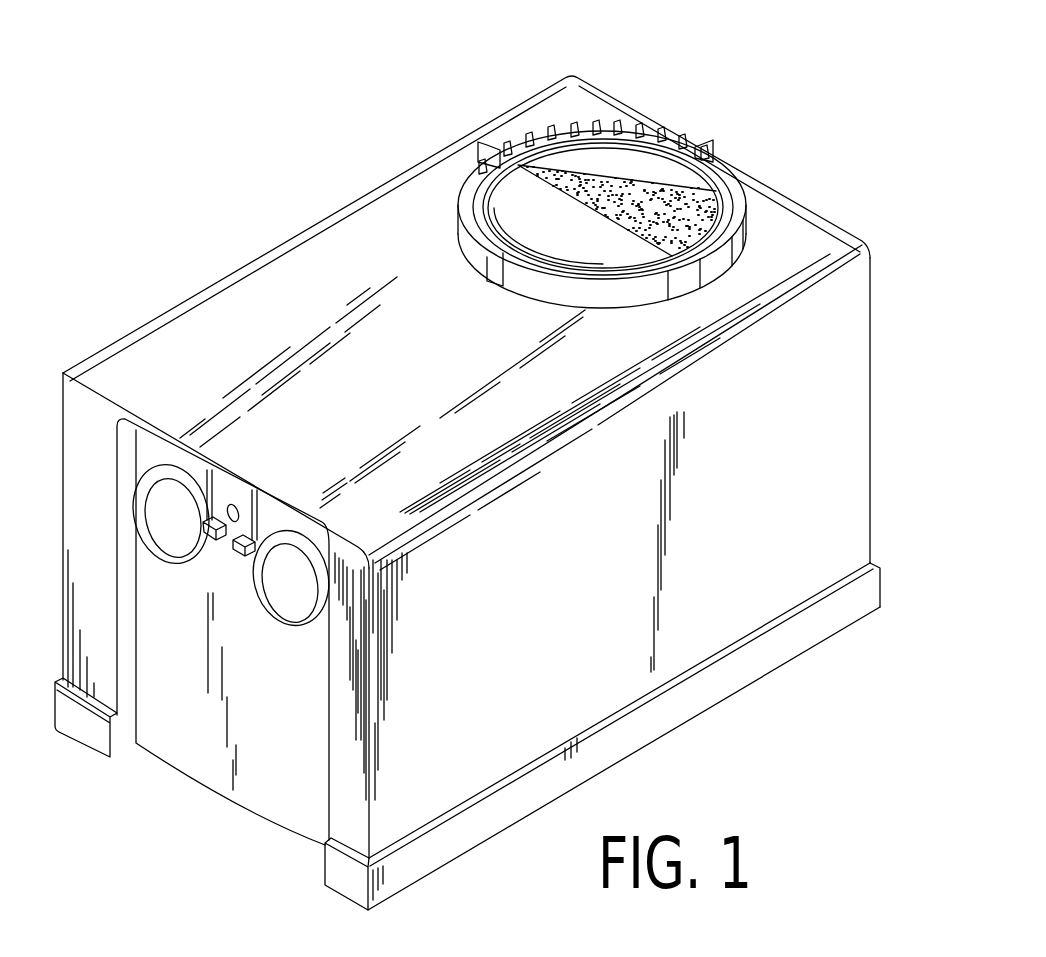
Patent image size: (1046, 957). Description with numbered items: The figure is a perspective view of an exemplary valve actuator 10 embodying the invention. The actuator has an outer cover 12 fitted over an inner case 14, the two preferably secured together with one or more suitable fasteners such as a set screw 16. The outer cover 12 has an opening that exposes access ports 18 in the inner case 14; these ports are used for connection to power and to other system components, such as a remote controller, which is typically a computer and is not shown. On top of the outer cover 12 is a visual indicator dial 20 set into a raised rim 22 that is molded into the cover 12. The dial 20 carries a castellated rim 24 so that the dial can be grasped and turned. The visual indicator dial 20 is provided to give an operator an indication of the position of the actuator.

The valve actuator 10 is at (413, 107).
The outer cover 12 is at (757, 572).
The inner case 14 is at (193, 723).
The set screw 16 is at (229, 506).
The access ports 18 is at (175, 530).
The visual indicator dial 20 is at (688, 172).
The raised rim 22 is at (743, 198).
The castellated rim 24 is at (604, 140).